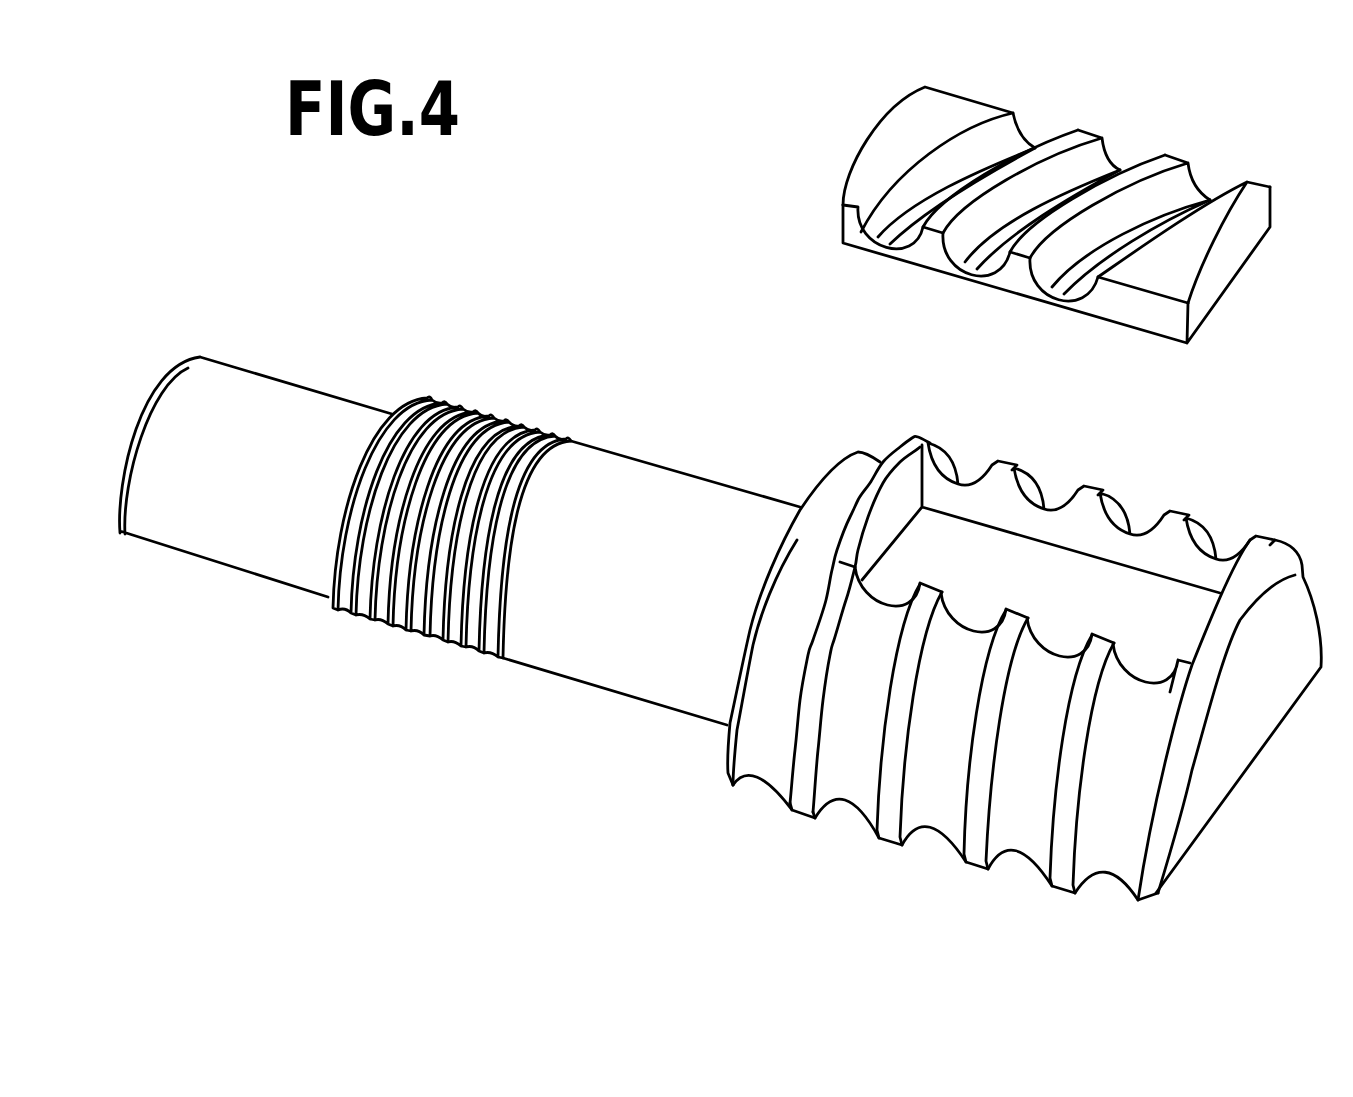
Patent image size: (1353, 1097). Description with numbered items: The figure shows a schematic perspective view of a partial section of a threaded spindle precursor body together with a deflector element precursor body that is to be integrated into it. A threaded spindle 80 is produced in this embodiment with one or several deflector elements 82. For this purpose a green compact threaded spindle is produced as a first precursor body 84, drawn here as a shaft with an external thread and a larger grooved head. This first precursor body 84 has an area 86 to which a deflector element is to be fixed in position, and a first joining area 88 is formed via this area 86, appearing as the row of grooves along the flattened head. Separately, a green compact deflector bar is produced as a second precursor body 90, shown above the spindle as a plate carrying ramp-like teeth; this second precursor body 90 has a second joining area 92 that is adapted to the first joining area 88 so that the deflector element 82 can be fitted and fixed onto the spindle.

The threaded spindle 80 is at (602, 667).
The deflector element 82 is at (1240, 257).
The first precursor body 84 is at (690, 430).
The area 86 is at (1167, 547).
The first joining area 88 is at (1028, 560).
The second precursor body 90 is at (1077, 220).
The second joining area 92 is at (1123, 313).